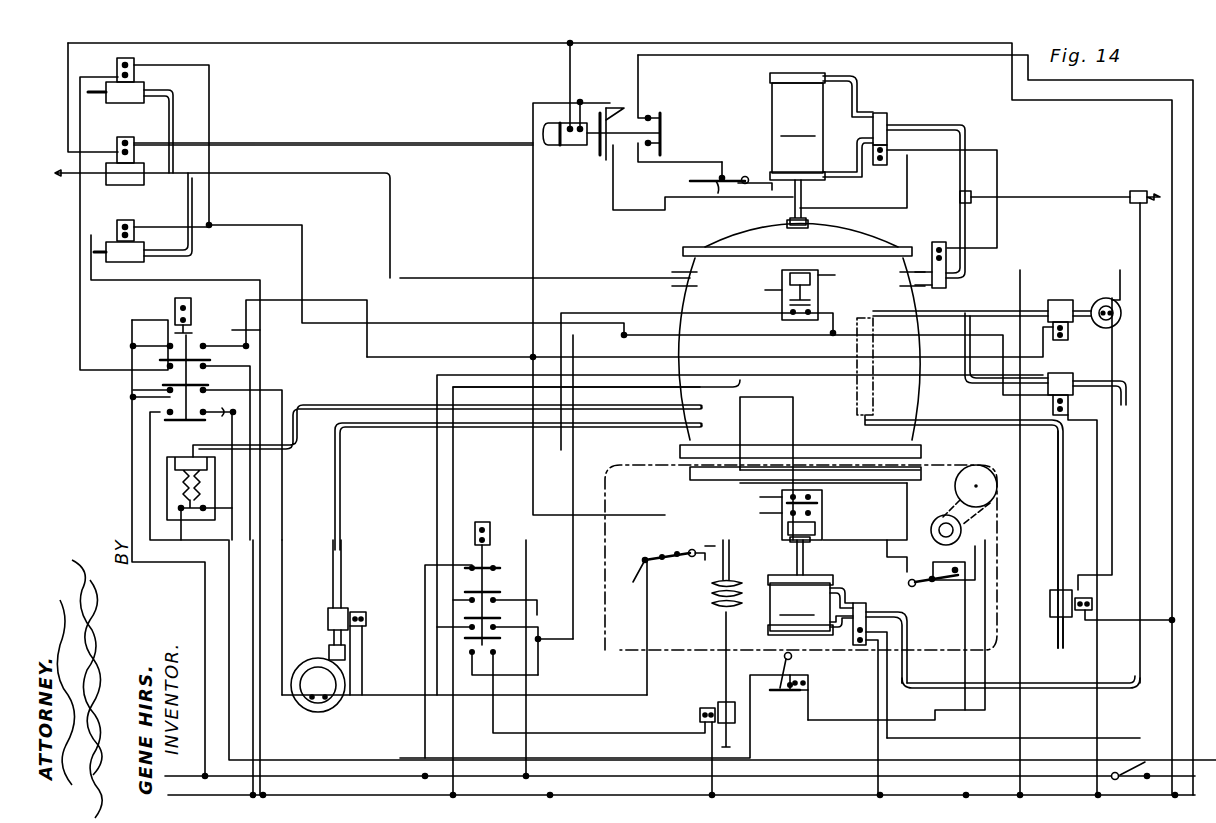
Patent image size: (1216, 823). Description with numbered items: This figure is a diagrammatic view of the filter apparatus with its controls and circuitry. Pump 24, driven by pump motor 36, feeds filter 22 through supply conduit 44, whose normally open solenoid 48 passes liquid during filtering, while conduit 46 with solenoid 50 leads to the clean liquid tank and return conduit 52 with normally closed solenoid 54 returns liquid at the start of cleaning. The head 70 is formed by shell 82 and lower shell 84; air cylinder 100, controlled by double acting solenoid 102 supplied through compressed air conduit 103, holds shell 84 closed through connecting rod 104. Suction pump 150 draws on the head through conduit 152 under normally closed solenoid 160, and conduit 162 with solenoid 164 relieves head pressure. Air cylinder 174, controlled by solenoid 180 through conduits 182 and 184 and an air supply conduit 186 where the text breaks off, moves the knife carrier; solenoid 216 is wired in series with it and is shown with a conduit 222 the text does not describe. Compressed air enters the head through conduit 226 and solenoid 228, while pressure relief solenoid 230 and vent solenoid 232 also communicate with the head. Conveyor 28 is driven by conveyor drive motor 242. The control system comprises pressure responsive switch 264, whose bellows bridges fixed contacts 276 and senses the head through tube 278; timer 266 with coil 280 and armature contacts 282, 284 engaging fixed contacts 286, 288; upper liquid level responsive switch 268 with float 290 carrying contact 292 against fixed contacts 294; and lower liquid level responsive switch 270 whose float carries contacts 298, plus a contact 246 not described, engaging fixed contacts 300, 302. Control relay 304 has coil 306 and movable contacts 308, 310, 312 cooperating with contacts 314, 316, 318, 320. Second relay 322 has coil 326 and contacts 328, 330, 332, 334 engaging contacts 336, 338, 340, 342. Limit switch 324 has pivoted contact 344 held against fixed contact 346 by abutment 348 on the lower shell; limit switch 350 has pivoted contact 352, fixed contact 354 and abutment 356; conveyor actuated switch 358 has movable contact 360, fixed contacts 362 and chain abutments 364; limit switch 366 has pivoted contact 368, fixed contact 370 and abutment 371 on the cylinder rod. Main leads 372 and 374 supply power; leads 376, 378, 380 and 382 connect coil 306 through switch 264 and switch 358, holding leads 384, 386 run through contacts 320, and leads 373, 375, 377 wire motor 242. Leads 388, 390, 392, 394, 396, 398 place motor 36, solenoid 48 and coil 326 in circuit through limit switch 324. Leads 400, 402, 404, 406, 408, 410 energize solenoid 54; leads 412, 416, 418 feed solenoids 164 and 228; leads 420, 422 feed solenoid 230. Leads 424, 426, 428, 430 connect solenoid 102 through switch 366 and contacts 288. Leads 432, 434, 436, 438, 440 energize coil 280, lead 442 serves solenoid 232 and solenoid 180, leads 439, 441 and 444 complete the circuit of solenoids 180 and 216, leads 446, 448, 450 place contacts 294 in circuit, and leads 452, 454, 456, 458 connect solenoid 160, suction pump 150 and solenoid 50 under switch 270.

The filter 22 is at (895, 230).
The pump 24 is at (342, 704).
The conveyor 28 is at (997, 464).
The pump motor 36 is at (324, 708).
The supply conduit 44 is at (339, 510).
The conduit 46 is at (1063, 506).
The solenoid 48 is at (328, 618).
The solenoid 50 is at (1050, 576).
The return conduit 52 is at (720, 660).
The solenoid 54 is at (718, 703).
The head 70 is at (910, 390).
The shell 82 is at (910, 406).
The lower shell 84 is at (876, 546).
The air cylinder 100 is at (800, 605).
The double acting solenoid 102 is at (866, 604).
The conduit 103 is at (1138, 672).
The connecting rod 104 is at (803, 558).
The suction pump 150 is at (1117, 274).
The conduit 152 is at (1026, 304).
The solenoid 160 is at (1094, 294).
The conduit 162 is at (982, 394).
The solenoid 164 is at (1072, 420).
The air cylinder 174 is at (838, 149).
The solenoid 180 is at (889, 109).
The conduit 182 is at (862, 172).
The conduit 184 is at (861, 84).
The pipe 186 is at (969, 134).
The solenoid 216 is at (946, 288).
The pipe 222 is at (967, 226).
The conduit 226 is at (440, 272).
The solenoid 228 is at (146, 263).
The pressure relief solenoid 230 is at (146, 79).
The vent solenoid 232 is at (140, 196).
The conveyor drive motor 242 is at (934, 520).
The contact 246 is at (782, 512).
The pressure responsive switch 264 is at (252, 485).
The timer 266 is at (548, 100).
The upper liquid level responsive switch 268 is at (829, 297).
The lower liquid level responsive switch 270 is at (828, 527).
The fixed contacts 276 is at (190, 525).
The tube 278 is at (297, 442).
The coil 280 is at (568, 148).
The contacts 282 is at (600, 94).
The second pair of contacts 284 is at (664, 130).
The fixed contacts 286 is at (610, 108).
The fixed contacts 288 is at (649, 115).
The float 290 is at (784, 277).
The contact 292 is at (784, 300).
The fixed contacts 294 is at (788, 316).
The contacts 298 is at (808, 498).
The fixed contacts 300 is at (782, 496).
The fixed contacts 302 is at (808, 514).
The control relay 304 is at (222, 300).
The coil 306 is at (175, 298).
The movable contact 308 is at (162, 360).
The movable contact 310 is at (162, 387).
The movable contact 312 is at (170, 424).
The normally closed contacts 314 is at (212, 366).
The normally open contacts 316 is at (171, 344).
The contacts 318 is at (166, 392).
The contacts 320 is at (168, 413).
The second relay 322 is at (501, 511).
The limit switch 324 is at (668, 583).
The coil 326 is at (484, 521).
The contact 328 is at (493, 568).
The contact 330 is at (493, 590).
The contact 332 is at (493, 624).
The contact 334 is at (500, 655).
The contacts 336 is at (468, 561).
The contacts 338 is at (493, 600).
The contacts 340 is at (472, 637).
The contacts 342 is at (472, 660).
The pivoted contact 344 is at (650, 558).
The fixed contact 346 is at (636, 582).
The abutment 348 is at (672, 563).
The limit switch 350 is at (926, 592).
The pivoted contact 352 is at (942, 585).
The fixed contact 354 is at (965, 558).
The abutment 356 is at (908, 578).
The conveyor actuated switch 358 is at (788, 701).
The movable contact 360 is at (795, 691).
The fixed contacts 362 is at (812, 680).
The abutments 364 is at (950, 450).
The limit switch 366 is at (738, 158).
The pivoted contact 368 is at (742, 188).
The fixed contact 370 is at (708, 192).
The abutment 371 is at (748, 196).
The main lead 372 is at (787, 772).
The lead 373 is at (976, 662).
The main lead 374 is at (798, 798).
The lead 375 is at (958, 534).
The lead 376 is at (205, 587).
The lead 377 is at (970, 638).
The lead 378 is at (232, 330).
The lead 380 is at (450, 754).
The lead 382 is at (828, 728).
The lead 384 is at (150, 514).
The lead 386 is at (226, 414).
The lead 388 is at (165, 381).
The lead 390 is at (282, 551).
The lead 392 is at (359, 634).
The lead 394 is at (370, 684).
The lead 396 is at (614, 530).
The lead 398 is at (554, 716).
The lead 400 is at (132, 341).
The lead 402 is at (369, 360).
The lead 404 is at (455, 448).
The lead 406 is at (544, 675).
The lead 408 is at (636, 736).
The lead 410 is at (709, 749).
The lead 412 is at (922, 338).
The lead 416 is at (1094, 458).
The lead 418 is at (92, 276).
The lead 420 is at (80, 185).
The lead 422 is at (209, 118).
The lead 424 is at (368, 282).
The lead 426 is at (680, 160).
The lead 428 is at (705, 59).
The lead 430 is at (886, 698).
The lead 432 is at (522, 748).
The lead 434 is at (438, 491).
The lead 436 is at (542, 254).
The lead 438 is at (565, 52).
The lead 439 is at (584, 76).
The lead 440 is at (135, 42).
The lead 441 is at (630, 210).
The lead 442 is at (1016, 166).
The lead 444 is at (1028, 752).
The lead 446 is at (420, 732).
The lead 448 is at (574, 454).
The lead 450 is at (833, 333).
The lead 452 is at (760, 356).
The lead 454 is at (1069, 337).
The lead 456 is at (1110, 528).
The lead 458 is at (1122, 606).